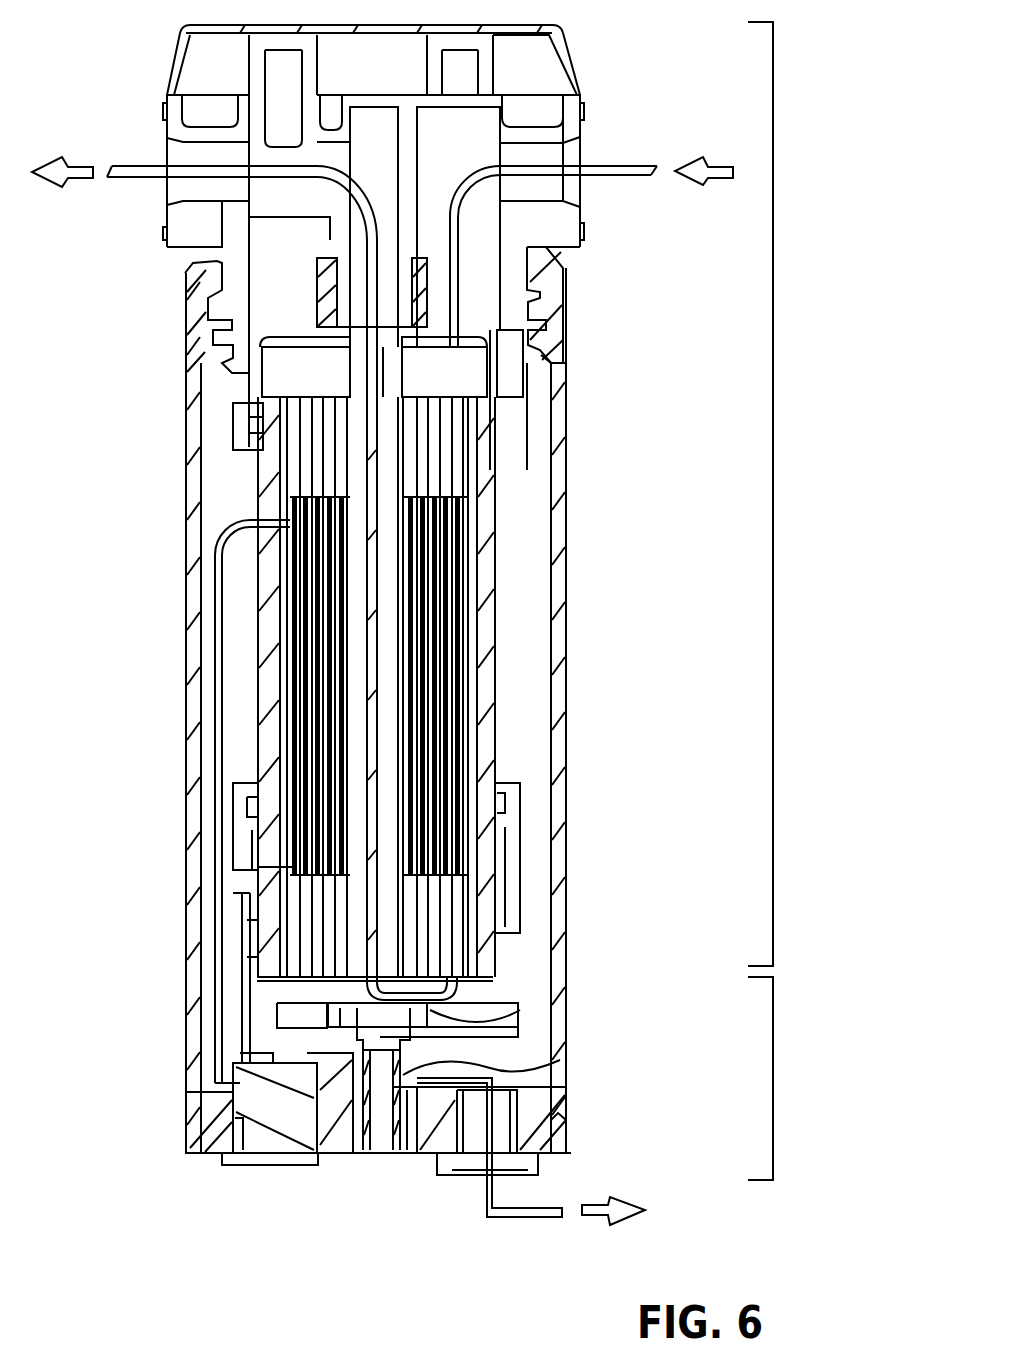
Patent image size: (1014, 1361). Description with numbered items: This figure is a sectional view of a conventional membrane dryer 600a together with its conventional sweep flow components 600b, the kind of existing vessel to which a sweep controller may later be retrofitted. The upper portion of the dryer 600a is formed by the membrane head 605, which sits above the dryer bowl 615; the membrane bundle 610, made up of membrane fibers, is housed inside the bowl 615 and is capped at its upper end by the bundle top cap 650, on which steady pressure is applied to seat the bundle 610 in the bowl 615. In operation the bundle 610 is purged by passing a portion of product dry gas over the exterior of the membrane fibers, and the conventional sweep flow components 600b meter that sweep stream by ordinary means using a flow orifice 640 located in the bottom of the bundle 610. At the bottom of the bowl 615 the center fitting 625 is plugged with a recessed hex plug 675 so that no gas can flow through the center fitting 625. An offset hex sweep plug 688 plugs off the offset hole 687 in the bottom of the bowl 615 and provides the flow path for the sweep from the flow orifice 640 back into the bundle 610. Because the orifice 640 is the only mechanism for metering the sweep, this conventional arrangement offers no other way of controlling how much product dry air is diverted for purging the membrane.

The membrane head 605 is at (582, 125).
The bundle top cap 650 is at (553, 365).
The membrane bundle 610 is at (437, 587).
The dryer bowl 615 is at (566, 678).
The recessed hex plug 675 is at (385, 1028).
The center fitting 625 is at (403, 1075).
The flow orifice 640 is at (263, 1038).
The offset hole 687 is at (252, 1136).
The offset hex sweep plug 688 is at (277, 1155).
The conventional dryer 600a is at (773, 163).
The conventional sweep flow components 600b is at (773, 1067).